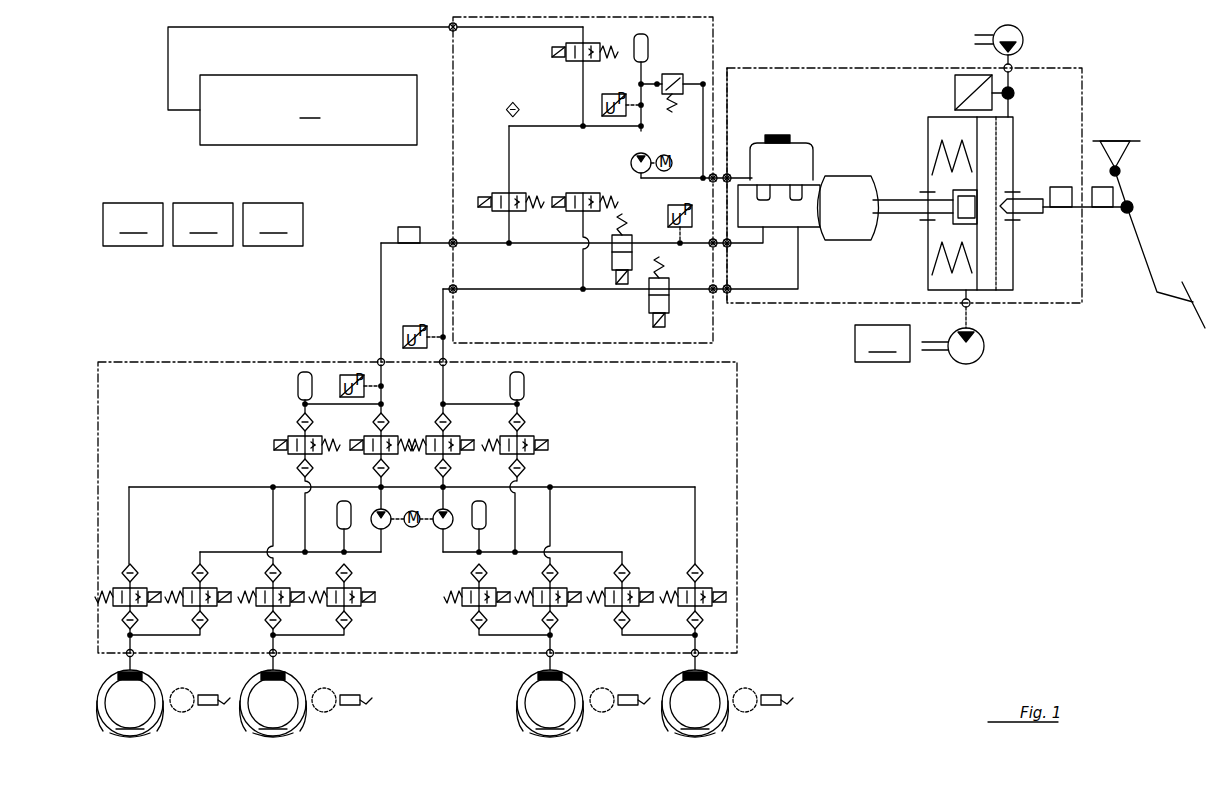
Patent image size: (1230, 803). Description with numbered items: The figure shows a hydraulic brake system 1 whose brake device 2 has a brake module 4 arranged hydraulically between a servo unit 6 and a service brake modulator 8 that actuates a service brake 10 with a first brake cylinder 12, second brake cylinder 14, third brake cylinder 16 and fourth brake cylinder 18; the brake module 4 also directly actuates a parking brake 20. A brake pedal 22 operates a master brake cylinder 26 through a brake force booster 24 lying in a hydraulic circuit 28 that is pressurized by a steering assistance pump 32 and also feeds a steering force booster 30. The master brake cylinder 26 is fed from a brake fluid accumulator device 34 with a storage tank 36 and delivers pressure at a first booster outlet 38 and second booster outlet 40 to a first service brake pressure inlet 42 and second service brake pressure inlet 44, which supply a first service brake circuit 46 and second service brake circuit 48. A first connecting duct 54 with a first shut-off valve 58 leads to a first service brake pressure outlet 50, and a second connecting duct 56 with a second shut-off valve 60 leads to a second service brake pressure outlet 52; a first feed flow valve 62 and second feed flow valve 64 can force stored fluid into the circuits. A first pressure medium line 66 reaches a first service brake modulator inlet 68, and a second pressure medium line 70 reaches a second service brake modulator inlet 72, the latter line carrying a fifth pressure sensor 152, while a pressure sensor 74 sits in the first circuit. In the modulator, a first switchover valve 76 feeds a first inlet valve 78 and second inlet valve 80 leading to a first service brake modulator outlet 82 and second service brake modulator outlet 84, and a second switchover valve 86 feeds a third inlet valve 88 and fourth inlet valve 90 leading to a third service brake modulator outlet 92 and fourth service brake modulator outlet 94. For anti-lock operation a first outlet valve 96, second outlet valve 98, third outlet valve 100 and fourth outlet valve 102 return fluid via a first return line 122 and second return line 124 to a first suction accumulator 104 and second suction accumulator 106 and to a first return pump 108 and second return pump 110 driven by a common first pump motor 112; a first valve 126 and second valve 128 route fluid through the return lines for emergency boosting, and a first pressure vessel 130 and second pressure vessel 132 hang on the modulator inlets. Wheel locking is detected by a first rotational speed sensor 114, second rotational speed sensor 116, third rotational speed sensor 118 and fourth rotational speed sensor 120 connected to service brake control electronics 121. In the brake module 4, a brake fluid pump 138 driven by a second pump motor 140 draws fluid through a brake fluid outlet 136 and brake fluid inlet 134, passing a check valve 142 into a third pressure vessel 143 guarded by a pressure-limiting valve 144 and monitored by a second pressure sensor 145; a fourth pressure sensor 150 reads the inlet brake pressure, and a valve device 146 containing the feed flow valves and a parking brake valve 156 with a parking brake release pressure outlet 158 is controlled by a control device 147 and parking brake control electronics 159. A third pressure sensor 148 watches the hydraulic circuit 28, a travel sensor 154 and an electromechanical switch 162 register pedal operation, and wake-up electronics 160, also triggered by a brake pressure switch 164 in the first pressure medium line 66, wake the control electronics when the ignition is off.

The brake system 1 is at (1148, 62).
The brake device 2 is at (764, 54).
The brake module 4 is at (716, 30).
The servo unit 6 is at (826, 68).
The service brake modulator 8 is at (737, 420).
The service brake 10 is at (812, 677).
The first brake cylinder 12 is at (158, 683).
The second brake cylinder 14 is at (301, 683).
The third brake cylinder 16 is at (578, 683).
The fourth brake cylinder 18 is at (723, 683).
The parking brake 20 is at (308, 86).
The brake pedal 22 is at (1145, 250).
The brake force booster 24 is at (1022, 128).
The master brake cylinder 26 is at (814, 230).
The hydraulic circuit 28 is at (1017, 70).
The steering force booster 30 is at (986, 346).
The steering assistance pump 32 is at (1024, 36).
The brake fluid accumulator device 34 is at (818, 135).
The storage tank 36 is at (818, 158).
The first booster outlet 38 is at (732, 246).
The second booster outlet 40 is at (730, 288).
The first service brake pressure inlet 42 is at (709, 246).
The second service brake pressure inlet 44 is at (709, 293).
The first service brake circuit 46 is at (183, 407).
The second service brake circuit 48 is at (655, 397).
The first service brake pressure outlet 50 is at (456, 248).
The second service brake pressure outlet 52 is at (456, 294).
The first connecting duct 54 is at (537, 246).
The second connecting duct 56 is at (541, 292).
The first shut-off valve 58 is at (633, 258).
The second shut-off valve 60 is at (648, 312).
The first feed flow valve 62 is at (490, 190).
The second feed flow valve 64 is at (566, 190).
The first pressure medium line 66 is at (381, 292).
The first service brake modulator inlet 68 is at (380, 360).
The second pressure medium line 70 is at (443, 300).
The second service brake modulator inlet 72 is at (444, 368).
The pressure sensor 74 is at (345, 375).
The first switchover valve 76 is at (385, 435).
The first inlet valve 78 is at (140, 595).
The second inlet valve 80 is at (280, 595).
The first service brake modulator outlet 82 is at (134, 652).
The second service brake modulator outlet 84 is at (277, 652).
The second switchover valve 86 is at (448, 435).
The third inlet valve 88 is at (558, 595).
The fourth inlet valve 90 is at (702, 595).
The third service brake modulator outlet 92 is at (554, 652).
The fourth service brake modulator outlet 94 is at (699, 652).
The first outlet valve 96 is at (208, 595).
The second outlet valve 98 is at (351, 595).
The third outlet valve 100 is at (486, 595).
The fourth outlet valve 102 is at (630, 595).
The first suction accumulator 104 is at (340, 526).
The second suction accumulator 106 is at (484, 526).
The first return pump 108 is at (383, 530).
The second return pump 110 is at (440, 530).
The first pump motor 112 is at (413, 510).
The first rotational speed sensor 114 is at (190, 708).
The second rotational speed sensor 116 is at (333, 708).
The third rotational speed sensor 118 is at (611, 708).
The fourth rotational speed sensor 120 is at (754, 708).
The service brake control electronics 121 is at (133, 224).
The first return line 122 is at (235, 552).
The second return line 124 is at (605, 552).
The first valve 126 is at (292, 435).
The second valve 128 is at (528, 435).
The first pressure vessel 130 is at (298, 383).
The second pressure vessel 132 is at (524, 384).
The brake fluid inlet 134 is at (708, 181).
The brake fluid outlet 136 is at (730, 172).
The brake fluid pump 138 is at (645, 153).
The second pump motor 140 is at (670, 156).
The check valve 142 is at (634, 140).
The third pressure vessel 143 is at (650, 48).
The pressure-limiting valve 144 is at (714, 126).
The second pressure sensor 145 is at (614, 94).
The valve device 146 is at (516, 118).
The control device 147 is at (203, 224).
The third pressure sensor 148 is at (954, 80).
The fourth pressure sensor 150 is at (667, 214).
The fifth pressure sensor 152 is at (410, 325).
The travel sensor 154 is at (1058, 186).
The parking brake valve 156 is at (566, 60).
The parking brake release pressure outlet 158 is at (458, 32).
The parking brake control electronics 159 is at (273, 224).
The wake-up electronics 160 is at (882, 343).
The electromechanical switch 162 is at (1104, 208).
The brake pressure switch 164 is at (409, 226).